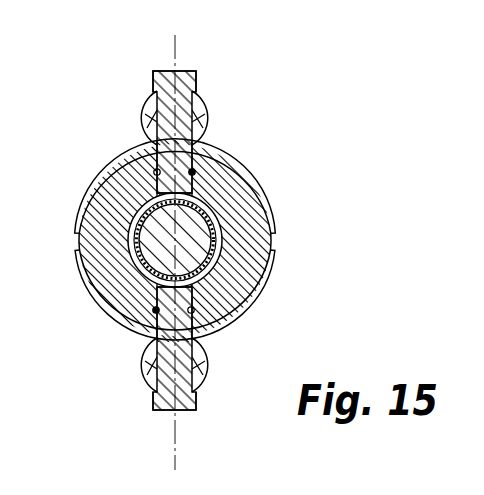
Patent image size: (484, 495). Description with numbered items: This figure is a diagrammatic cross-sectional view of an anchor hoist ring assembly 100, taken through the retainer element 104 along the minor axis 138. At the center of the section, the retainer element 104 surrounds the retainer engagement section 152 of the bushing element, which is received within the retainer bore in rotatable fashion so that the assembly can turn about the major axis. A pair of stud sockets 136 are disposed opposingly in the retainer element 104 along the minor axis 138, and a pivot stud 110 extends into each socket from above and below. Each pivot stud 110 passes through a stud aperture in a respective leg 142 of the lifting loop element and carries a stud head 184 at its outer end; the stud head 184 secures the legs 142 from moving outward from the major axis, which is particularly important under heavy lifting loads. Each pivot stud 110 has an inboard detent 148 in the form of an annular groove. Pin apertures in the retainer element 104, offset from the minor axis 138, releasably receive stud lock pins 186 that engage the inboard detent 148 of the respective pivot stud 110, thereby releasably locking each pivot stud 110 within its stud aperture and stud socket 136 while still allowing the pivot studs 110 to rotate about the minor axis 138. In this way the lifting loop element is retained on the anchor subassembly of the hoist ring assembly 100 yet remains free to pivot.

The anchor hoist ring assembly 100 is at (337, 145).
The retainer element 104 is at (266, 204).
The pivot stud 110 is at (166, 117).
The stud socket 136 is at (252, 302).
The minor axis 138 is at (173, 46).
The leg 142 is at (203, 117).
The inboard detent 148 is at (156, 171).
The retainer engagement section 152 is at (139, 262).
The stud head 184 is at (182, 76).
The stud lock pin 186 is at (194, 169).